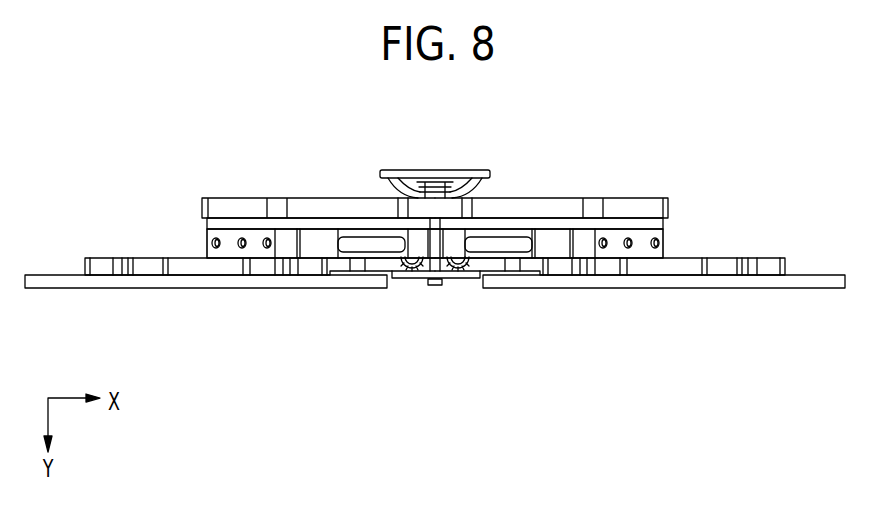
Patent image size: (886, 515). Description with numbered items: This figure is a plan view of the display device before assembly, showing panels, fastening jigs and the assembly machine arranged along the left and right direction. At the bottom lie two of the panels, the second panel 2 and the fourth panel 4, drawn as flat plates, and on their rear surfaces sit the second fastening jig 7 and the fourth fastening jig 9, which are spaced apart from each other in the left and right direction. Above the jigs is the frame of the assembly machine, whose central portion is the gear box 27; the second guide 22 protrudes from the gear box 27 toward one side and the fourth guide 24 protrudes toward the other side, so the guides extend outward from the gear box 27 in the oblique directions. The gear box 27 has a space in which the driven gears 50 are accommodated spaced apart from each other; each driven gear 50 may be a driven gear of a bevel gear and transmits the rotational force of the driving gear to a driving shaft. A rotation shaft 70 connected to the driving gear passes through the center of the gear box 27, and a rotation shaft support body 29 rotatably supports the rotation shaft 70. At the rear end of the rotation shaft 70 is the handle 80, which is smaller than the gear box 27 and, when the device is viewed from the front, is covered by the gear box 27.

The second panel 2 is at (818, 283).
The fourth panel 4 is at (52, 282).
The second fastening jig 7 is at (678, 267).
The fourth fastening jig 9 is at (182, 265).
The second guide 22 is at (633, 205).
The fourth guide 24 is at (305, 207).
The gear box 27 is at (434, 207).
The rotation shaft support body 29 is at (443, 270).
The driven gear 50 is at (413, 267).
The rotation shaft 70 is at (433, 242).
The handle 80 is at (464, 172).